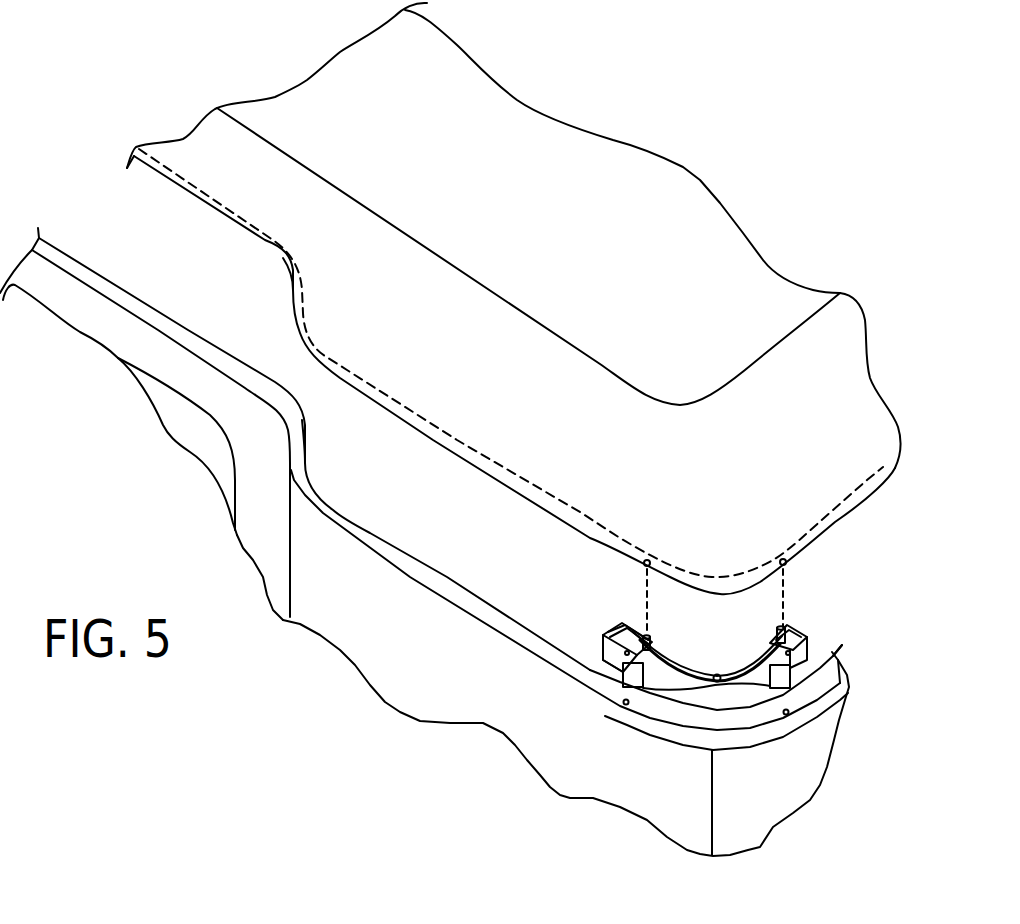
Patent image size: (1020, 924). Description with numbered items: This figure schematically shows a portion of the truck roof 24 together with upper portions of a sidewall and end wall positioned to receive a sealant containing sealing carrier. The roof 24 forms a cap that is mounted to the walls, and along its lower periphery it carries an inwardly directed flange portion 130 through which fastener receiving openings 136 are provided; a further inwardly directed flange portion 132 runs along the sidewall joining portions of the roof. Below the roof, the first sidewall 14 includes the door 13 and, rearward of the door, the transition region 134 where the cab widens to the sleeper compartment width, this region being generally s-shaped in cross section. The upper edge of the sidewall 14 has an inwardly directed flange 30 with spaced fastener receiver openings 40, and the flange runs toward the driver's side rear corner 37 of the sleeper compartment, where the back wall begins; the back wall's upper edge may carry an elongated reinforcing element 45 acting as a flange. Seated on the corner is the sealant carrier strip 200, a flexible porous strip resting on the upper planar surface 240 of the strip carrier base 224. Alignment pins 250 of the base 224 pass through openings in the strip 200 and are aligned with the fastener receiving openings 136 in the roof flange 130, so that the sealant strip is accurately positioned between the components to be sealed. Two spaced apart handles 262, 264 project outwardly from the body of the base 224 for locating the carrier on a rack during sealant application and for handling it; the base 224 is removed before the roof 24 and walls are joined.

The door 13 is at (190, 434).
The first sidewall 14 is at (523, 732).
The roof 24 is at (723, 243).
The inwardly directed flange 30 is at (448, 592).
The driver's side rear corner 37 is at (737, 837).
The fastener receiver openings 40 is at (631, 704).
The elongated reinforcing element 45 is at (820, 685).
The inwardly directed flange portion 130 is at (857, 507).
The inwardly directed flange portion 132 is at (157, 172).
The transition region 134 is at (277, 270).
The fastener receiving openings 136 is at (655, 567).
The sealant carrier strip 200 is at (726, 639).
The strip carrier base 224 is at (700, 697).
The upper planar surface 240 is at (670, 652).
The alignment pins 250 is at (613, 650).
The handle 262 is at (617, 668).
The handle 264 is at (843, 641).